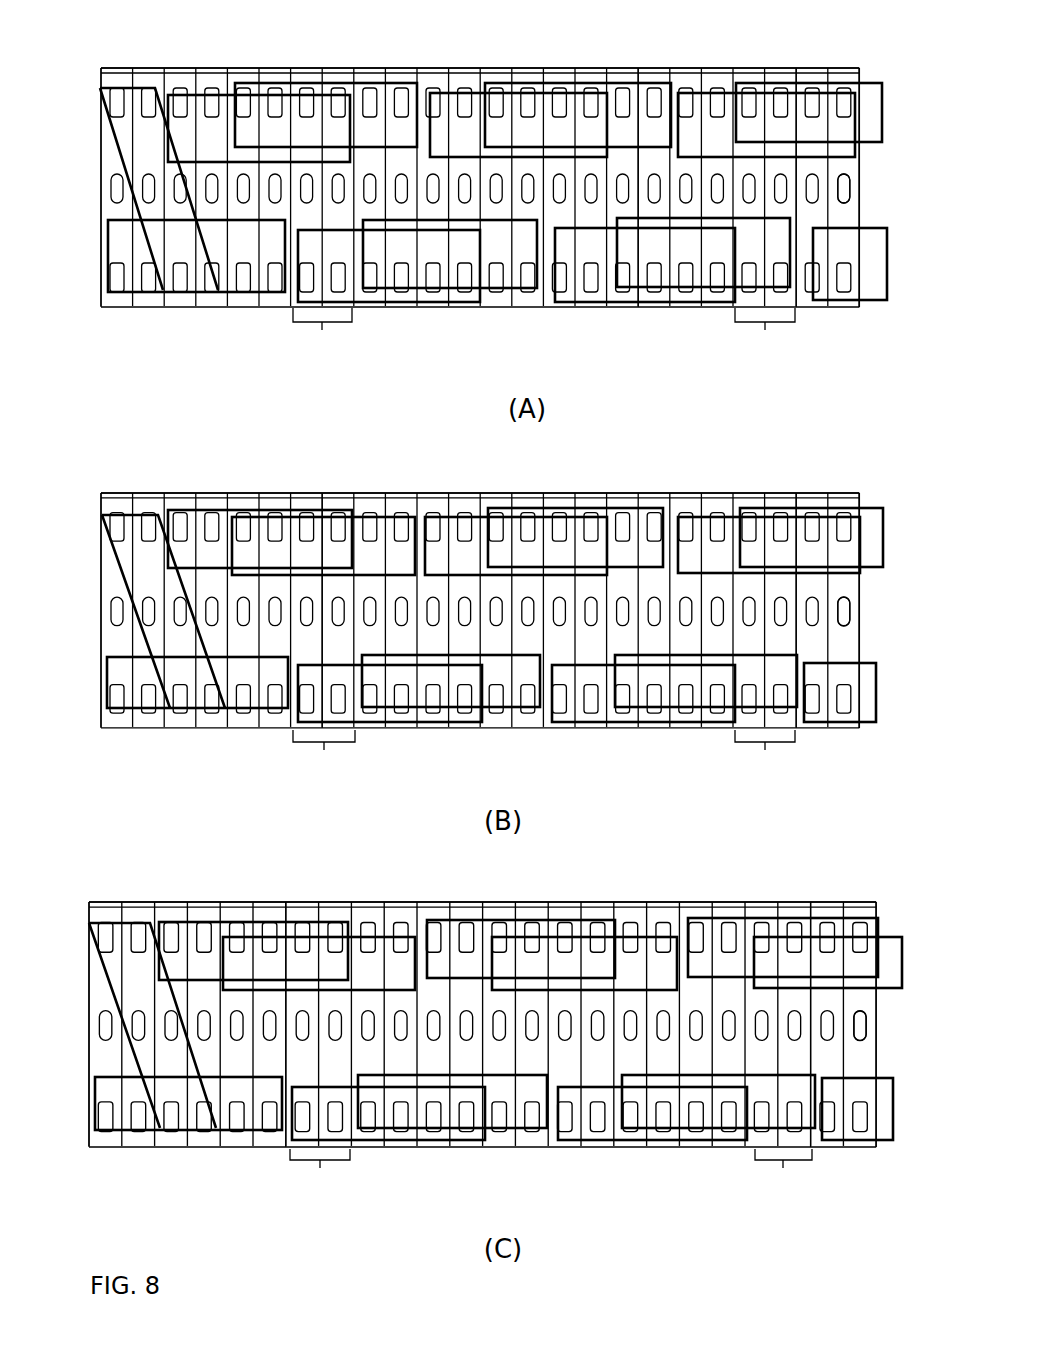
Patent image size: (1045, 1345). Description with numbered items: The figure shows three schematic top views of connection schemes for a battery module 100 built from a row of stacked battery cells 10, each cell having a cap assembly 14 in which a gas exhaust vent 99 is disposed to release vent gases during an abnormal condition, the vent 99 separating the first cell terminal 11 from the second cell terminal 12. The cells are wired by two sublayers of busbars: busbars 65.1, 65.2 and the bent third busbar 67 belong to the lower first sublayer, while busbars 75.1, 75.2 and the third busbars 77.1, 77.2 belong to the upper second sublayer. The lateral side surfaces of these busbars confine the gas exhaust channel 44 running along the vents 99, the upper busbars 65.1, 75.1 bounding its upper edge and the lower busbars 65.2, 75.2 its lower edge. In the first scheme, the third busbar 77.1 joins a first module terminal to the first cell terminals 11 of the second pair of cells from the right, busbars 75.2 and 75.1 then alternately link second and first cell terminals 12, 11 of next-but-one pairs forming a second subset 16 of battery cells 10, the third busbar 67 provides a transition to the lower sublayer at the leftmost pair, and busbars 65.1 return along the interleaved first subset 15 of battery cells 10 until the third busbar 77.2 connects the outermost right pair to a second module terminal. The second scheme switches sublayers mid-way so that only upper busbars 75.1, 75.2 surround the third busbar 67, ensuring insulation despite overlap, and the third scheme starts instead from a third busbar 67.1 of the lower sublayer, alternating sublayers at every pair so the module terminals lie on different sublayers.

The battery module 100 is at (134, 54).
The battery cell 10 is at (372, 68).
The first cell terminal 11 is at (648, 70).
The second cell terminal 12 is at (180, 292).
The cap assembly 14 is at (855, 183).
The first subset of battery cells 15 is at (322, 755).
The second subset of battery cells 16 is at (773, 755).
The gas exhaust channel 44 is at (798, 174).
The third busbar 67 is at (98, 143).
The third busbar 67.1 is at (885, 937).
The gas exhaust vent 99 is at (857, 203).
The busbar 65.1 is at (200, 94).
The busbar 65.2 is at (372, 302).
The busbar 75.1 is at (278, 83).
The busbar 75.2 is at (242, 292).
The third busbar 77.1 is at (786, 83).
The third busbar 77.2 is at (840, 300).